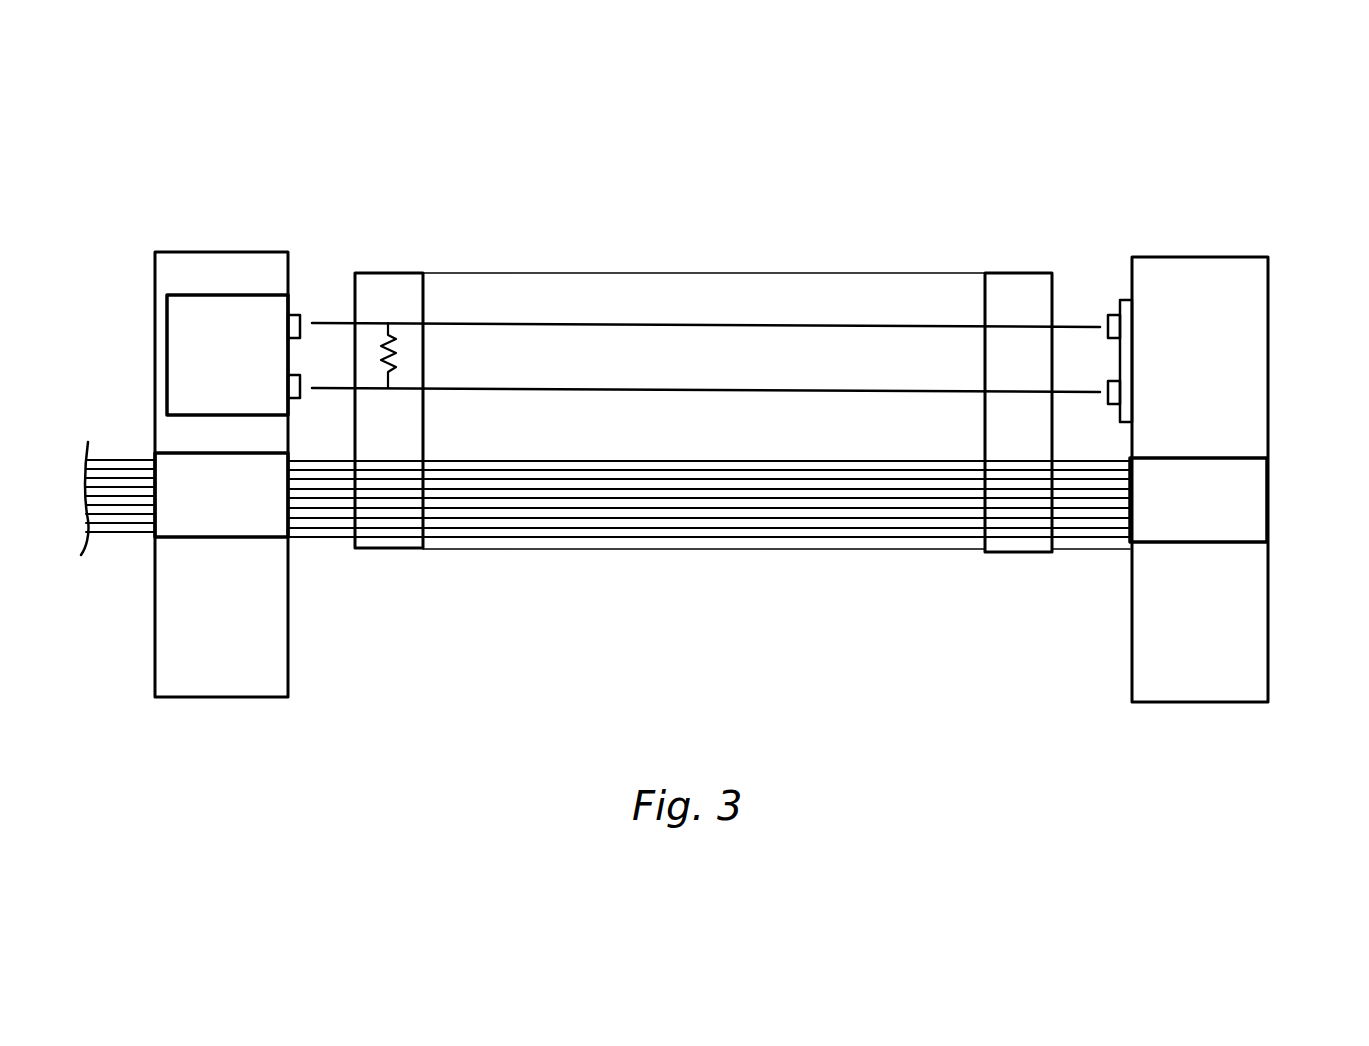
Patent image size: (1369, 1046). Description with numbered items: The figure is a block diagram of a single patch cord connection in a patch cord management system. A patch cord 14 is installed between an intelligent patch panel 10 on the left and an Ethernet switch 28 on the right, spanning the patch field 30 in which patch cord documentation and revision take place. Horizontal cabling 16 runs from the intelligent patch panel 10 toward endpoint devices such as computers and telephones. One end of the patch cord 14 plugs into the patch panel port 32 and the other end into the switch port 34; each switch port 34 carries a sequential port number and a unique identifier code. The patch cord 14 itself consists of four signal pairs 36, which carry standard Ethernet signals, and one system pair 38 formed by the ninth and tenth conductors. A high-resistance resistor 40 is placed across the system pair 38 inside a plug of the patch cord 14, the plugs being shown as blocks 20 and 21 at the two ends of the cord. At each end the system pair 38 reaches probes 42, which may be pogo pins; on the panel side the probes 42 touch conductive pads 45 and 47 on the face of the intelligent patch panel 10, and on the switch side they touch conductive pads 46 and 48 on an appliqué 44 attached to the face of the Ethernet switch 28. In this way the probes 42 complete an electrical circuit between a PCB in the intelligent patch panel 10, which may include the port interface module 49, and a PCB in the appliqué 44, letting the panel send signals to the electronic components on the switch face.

The intelligent patch panel 10 is at (190, 252).
The patch cord 14 is at (777, 182).
The horizontal cabling 16 is at (126, 545).
The first termination block 20 is at (403, 258).
The second termination block 21 is at (976, 559).
The Ethernet switch 28 is at (1252, 257).
The patch field 30 is at (653, 603).
The patch panel port 32 is at (156, 455).
The switch port 34 is at (1240, 485).
The signal pairs 36 is at (1107, 553).
The system pair 38 is at (650, 313).
The resistor 40 is at (402, 355).
The probes 42 is at (320, 322).
The appliqué 44 is at (1112, 310).
The conductive pad 45 is at (297, 313).
The conductive pad 46 is at (1122, 295).
The conductive pad 47 is at (297, 400).
The conductive pad 48 is at (1110, 404).
The port interface module 49 is at (167, 322).